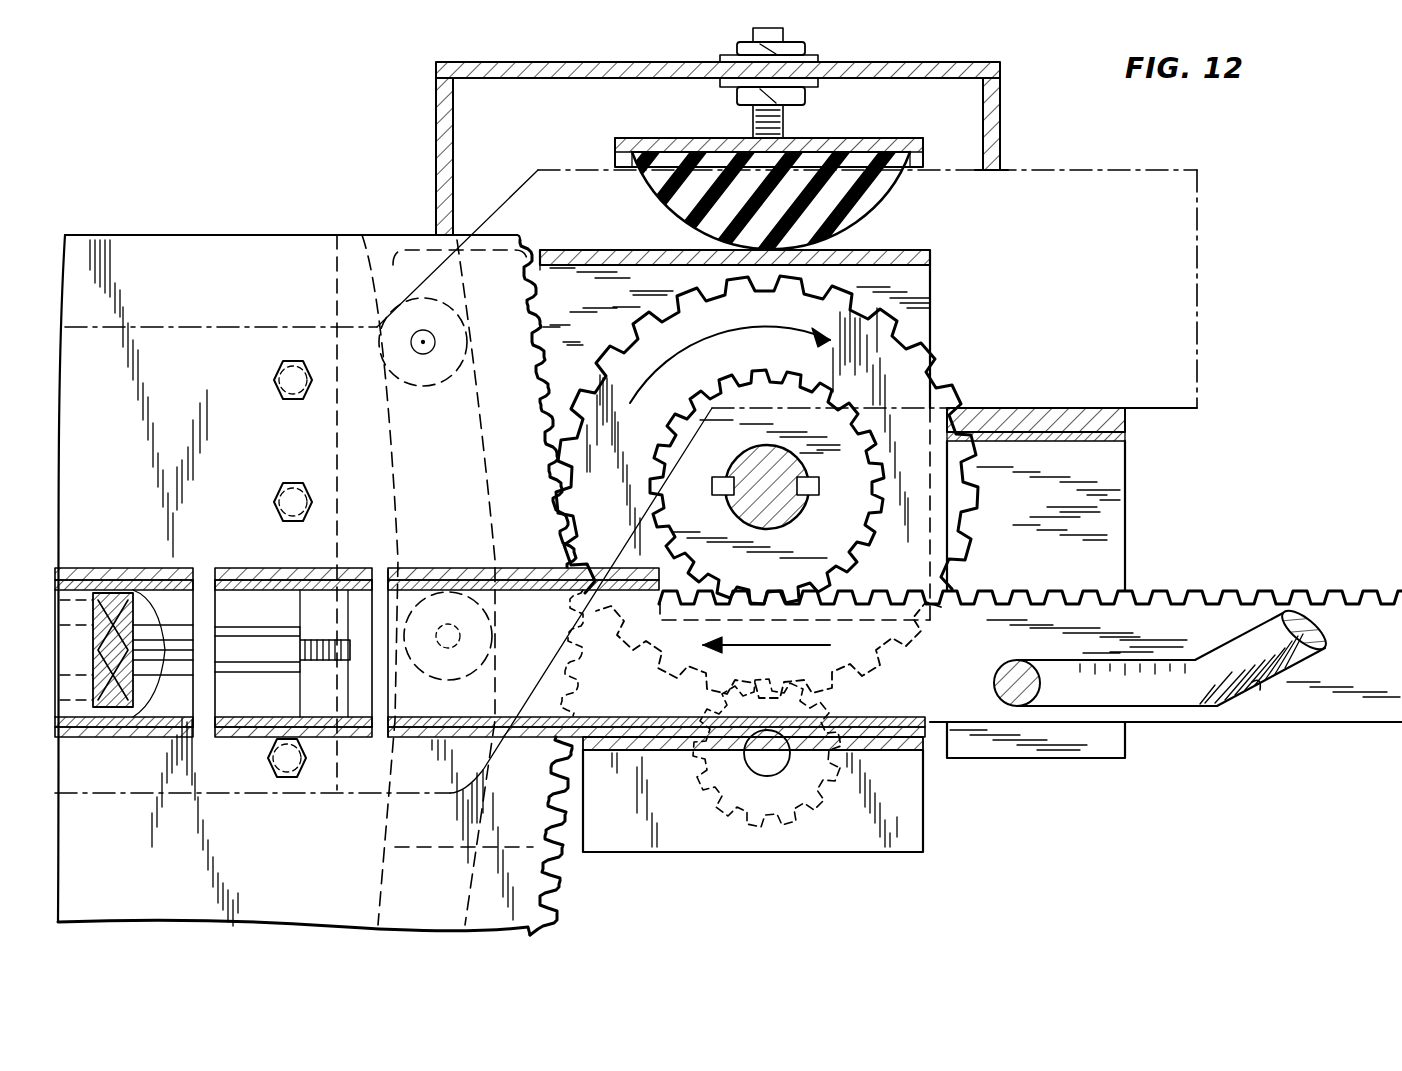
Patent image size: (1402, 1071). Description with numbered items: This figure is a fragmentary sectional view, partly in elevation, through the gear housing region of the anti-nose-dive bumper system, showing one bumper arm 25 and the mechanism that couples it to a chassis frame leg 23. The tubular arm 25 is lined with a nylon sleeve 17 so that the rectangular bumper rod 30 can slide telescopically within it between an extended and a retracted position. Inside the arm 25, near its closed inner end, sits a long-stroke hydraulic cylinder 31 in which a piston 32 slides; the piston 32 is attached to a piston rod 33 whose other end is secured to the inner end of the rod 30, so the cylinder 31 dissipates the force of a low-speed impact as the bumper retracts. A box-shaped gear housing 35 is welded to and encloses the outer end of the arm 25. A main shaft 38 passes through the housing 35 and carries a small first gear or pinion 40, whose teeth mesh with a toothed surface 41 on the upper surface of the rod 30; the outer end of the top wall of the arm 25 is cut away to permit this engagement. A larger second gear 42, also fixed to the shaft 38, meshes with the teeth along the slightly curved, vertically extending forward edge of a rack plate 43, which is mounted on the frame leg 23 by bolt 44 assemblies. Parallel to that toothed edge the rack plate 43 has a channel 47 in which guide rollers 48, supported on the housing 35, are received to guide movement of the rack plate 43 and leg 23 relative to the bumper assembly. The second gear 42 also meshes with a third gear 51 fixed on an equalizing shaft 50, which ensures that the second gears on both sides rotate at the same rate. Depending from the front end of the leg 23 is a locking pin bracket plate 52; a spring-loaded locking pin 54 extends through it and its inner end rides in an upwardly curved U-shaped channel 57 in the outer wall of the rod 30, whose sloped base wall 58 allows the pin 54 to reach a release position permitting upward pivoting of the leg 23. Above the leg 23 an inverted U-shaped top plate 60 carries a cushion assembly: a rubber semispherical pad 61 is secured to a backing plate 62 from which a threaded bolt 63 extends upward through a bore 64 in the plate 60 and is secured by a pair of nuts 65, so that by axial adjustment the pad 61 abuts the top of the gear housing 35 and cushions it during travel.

The nylon sleeve 17 is at (322, 568).
The frame leg 23 is at (1180, 203).
The bumper arm 25 is at (258, 568).
The rod 30 is at (1396, 722).
The hydraulic cylinder 31 is at (108, 737).
The piston 32 is at (103, 648).
The piston rod 33 is at (276, 632).
The gear housing 35 is at (930, 283).
The main shaft 38 is at (762, 455).
The first gear 40 is at (833, 400).
The toothed surface 41 is at (1300, 590).
The second gear 42 is at (930, 340).
The rack plate 43 is at (560, 890).
The bolt 44 is at (289, 400).
The channel 47 is at (485, 433).
The guide roller 48 is at (420, 386).
The equalizing shaft 50 is at (764, 765).
The third gear 51 is at (810, 808).
The locking pin bracket plate 52 is at (1117, 466).
The locking pin 54 is at (1030, 684).
The channel 57 is at (1258, 690).
The sloped base wall 58 is at (1312, 648).
The top plate 60 is at (1000, 62).
The semispherical pad 61 is at (900, 205).
The backing plate 62 is at (880, 142).
The threaded bolt 63 is at (755, 115).
The bore 64 is at (818, 72).
The nut 65 is at (795, 52).